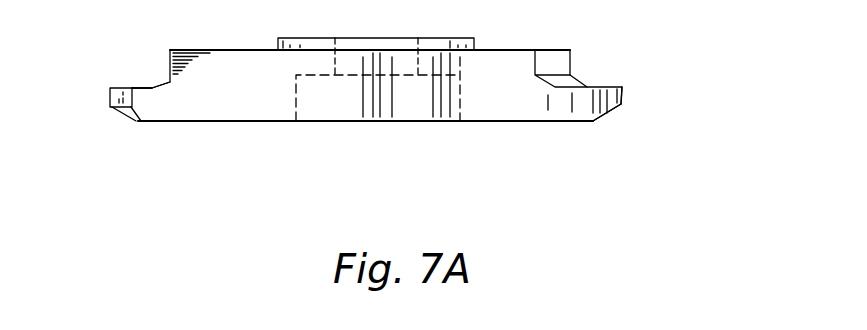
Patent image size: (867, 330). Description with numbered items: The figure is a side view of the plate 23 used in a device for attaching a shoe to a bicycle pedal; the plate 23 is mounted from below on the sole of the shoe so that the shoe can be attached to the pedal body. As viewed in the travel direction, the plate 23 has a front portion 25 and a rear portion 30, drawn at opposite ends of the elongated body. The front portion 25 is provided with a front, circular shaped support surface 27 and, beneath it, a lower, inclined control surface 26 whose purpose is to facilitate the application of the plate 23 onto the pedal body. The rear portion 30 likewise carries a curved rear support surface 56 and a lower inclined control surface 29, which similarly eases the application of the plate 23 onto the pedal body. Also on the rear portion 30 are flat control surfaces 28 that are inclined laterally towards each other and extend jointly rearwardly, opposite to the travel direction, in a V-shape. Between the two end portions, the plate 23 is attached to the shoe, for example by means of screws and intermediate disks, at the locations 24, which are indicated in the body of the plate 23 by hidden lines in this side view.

The plate 23 is at (268, 132).
The attachment locations 24 is at (413, 103).
The front portion 25 is at (604, 115).
The lower inclined control surface 26 is at (616, 110).
The front circular shaped support surface 27 is at (624, 88).
The flat control surfaces 28 is at (148, 101).
The lower inclined control surface 29 is at (119, 113).
The rear portion 30 is at (143, 87).
The curved rear support surface 56 is at (111, 101).